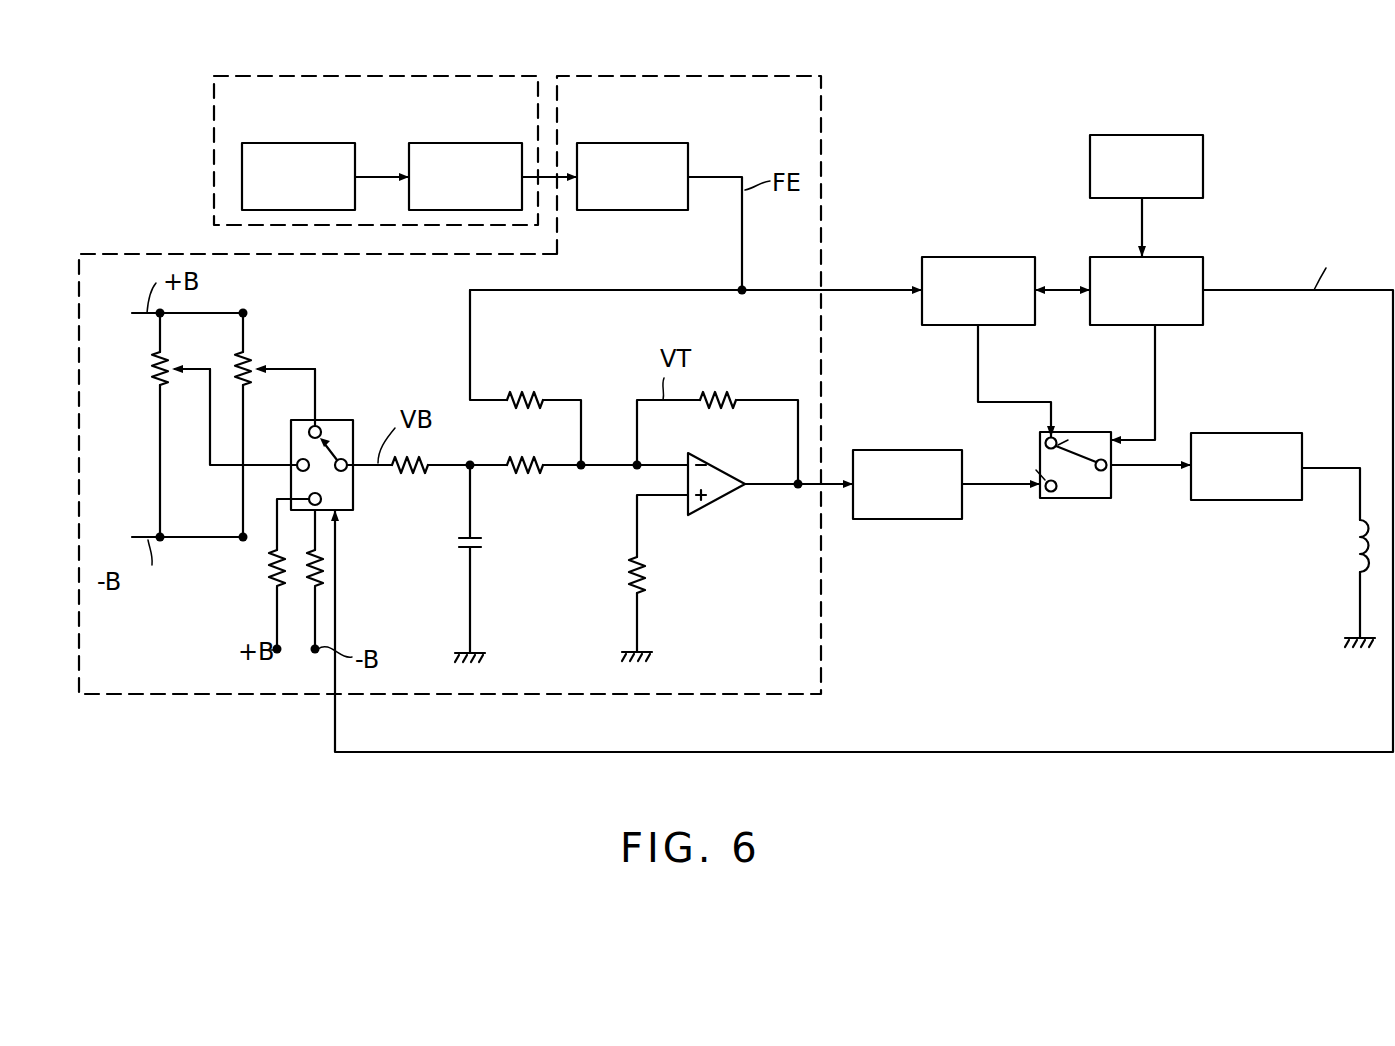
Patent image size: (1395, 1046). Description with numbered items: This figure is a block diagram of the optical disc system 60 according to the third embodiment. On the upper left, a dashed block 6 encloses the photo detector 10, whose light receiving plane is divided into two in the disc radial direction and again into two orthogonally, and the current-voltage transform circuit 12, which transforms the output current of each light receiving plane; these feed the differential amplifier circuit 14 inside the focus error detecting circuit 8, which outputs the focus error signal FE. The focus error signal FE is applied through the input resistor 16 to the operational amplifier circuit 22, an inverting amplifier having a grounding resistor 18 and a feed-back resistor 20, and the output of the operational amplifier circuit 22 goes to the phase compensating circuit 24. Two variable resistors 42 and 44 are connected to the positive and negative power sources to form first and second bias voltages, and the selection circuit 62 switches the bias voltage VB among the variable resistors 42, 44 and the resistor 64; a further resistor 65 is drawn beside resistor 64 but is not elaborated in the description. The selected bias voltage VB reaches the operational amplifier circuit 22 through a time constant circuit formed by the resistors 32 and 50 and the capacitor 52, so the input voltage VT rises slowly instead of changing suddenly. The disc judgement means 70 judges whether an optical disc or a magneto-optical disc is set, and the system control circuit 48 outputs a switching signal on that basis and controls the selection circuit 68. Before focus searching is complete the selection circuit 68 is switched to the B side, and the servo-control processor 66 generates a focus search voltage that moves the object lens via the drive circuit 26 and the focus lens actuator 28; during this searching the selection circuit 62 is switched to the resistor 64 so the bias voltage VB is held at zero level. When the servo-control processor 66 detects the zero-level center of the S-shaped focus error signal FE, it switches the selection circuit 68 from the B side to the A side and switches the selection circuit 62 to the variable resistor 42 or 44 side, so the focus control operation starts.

The optical pickup section 6 is at (408, 76).
The focus error detecting circuit 8 is at (700, 76).
The photo detector 10 is at (310, 143).
The current-voltage transform circuit 12 is at (473, 143).
The differential amplifier circuit 14 is at (640, 143).
The input resistor 16 is at (530, 396).
The grounding resistor 18 is at (626, 568).
The feed-back resistor 20 is at (733, 400).
The operational amplifier circuit 22 is at (722, 500).
The phase compensating circuit 24 is at (912, 520).
The drive circuit 26 is at (1237, 500).
The focus lens actuator 28 is at (1352, 553).
The resistor 32 is at (522, 478).
The variable resistor 42 is at (150, 383).
The variable resistor 44 is at (253, 356).
The system control circuit 48 is at (1174, 257).
The resistor 50 is at (408, 478).
The capacitor 52 is at (456, 549).
The optical disc system 60 is at (977, 80).
The selection circuit 62 is at (342, 420).
The resistor 64 is at (323, 555).
The resistor 65 is at (270, 578).
The servo-control processor (SSP) 66 is at (985, 257).
The selection circuit 68 is at (1097, 500).
The disc judgement means 70 is at (1160, 135).